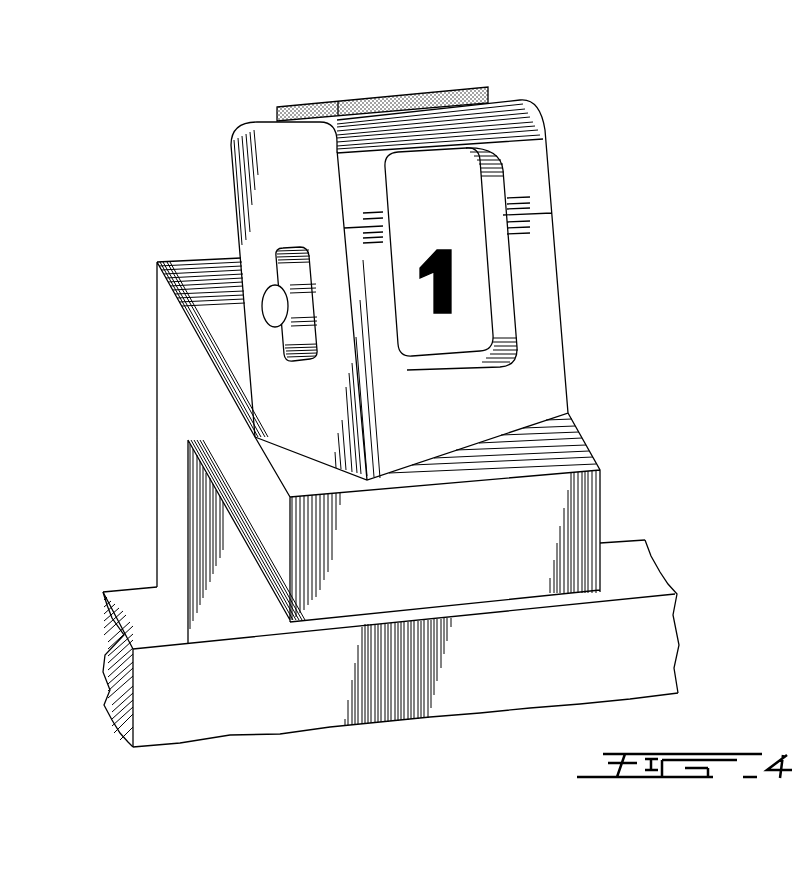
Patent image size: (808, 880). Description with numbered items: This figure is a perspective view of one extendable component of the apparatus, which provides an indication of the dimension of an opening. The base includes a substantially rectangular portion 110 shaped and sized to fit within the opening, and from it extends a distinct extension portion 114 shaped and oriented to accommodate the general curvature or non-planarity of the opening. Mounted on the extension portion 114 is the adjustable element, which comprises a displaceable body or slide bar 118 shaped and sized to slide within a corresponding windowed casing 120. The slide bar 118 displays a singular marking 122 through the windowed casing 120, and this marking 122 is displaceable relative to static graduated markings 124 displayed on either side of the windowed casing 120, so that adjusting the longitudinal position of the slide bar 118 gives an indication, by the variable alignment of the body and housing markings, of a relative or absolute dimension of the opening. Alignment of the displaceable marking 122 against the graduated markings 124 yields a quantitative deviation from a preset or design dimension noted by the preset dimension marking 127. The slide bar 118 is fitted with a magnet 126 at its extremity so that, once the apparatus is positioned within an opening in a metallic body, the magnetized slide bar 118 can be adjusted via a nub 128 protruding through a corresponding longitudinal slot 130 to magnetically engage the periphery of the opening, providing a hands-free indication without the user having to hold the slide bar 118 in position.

The rectangular portion 110 is at (640, 645).
The extension portion 114 is at (172, 497).
The slide bar 118 is at (448, 178).
The windowed casing 120 is at (542, 325).
The singular marking 122 is at (462, 220).
The graduated markings 124 is at (378, 212).
The magnet 126 is at (402, 95).
The preset dimension marking 127 is at (537, 208).
The nub 128 is at (273, 310).
The longitudinal slot 130 is at (290, 358).